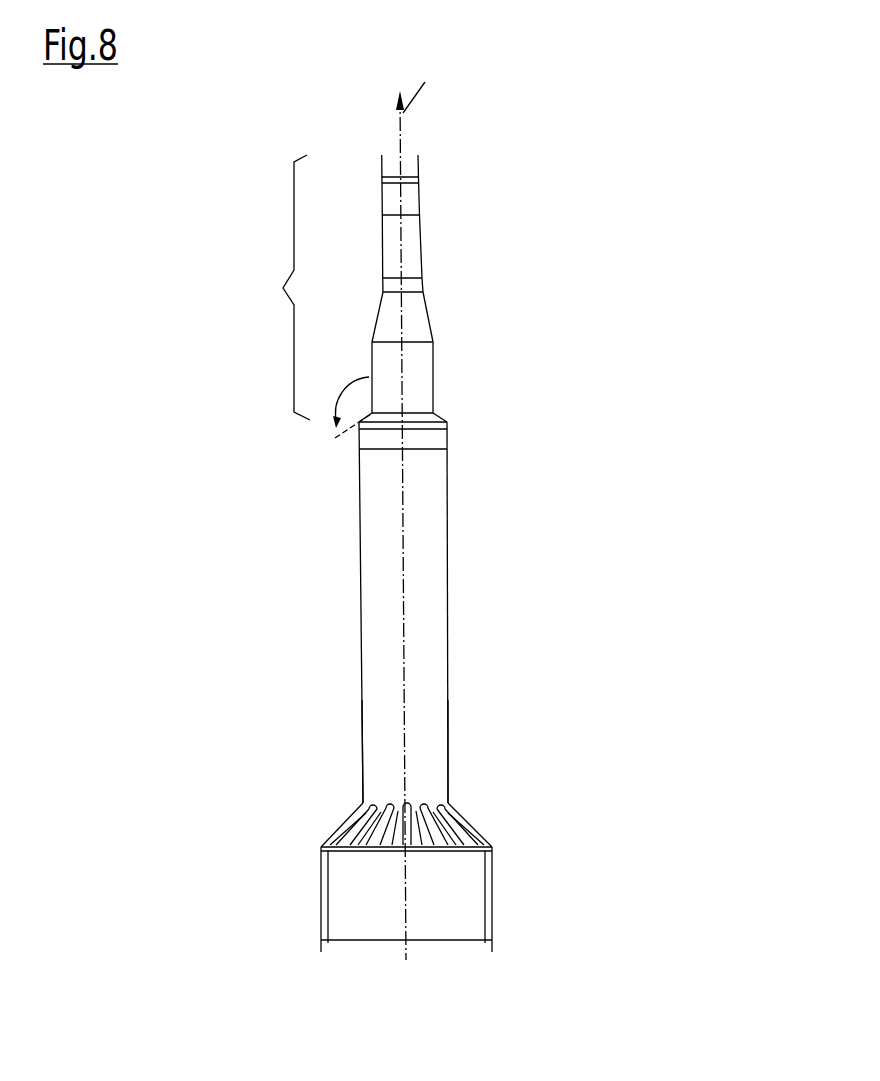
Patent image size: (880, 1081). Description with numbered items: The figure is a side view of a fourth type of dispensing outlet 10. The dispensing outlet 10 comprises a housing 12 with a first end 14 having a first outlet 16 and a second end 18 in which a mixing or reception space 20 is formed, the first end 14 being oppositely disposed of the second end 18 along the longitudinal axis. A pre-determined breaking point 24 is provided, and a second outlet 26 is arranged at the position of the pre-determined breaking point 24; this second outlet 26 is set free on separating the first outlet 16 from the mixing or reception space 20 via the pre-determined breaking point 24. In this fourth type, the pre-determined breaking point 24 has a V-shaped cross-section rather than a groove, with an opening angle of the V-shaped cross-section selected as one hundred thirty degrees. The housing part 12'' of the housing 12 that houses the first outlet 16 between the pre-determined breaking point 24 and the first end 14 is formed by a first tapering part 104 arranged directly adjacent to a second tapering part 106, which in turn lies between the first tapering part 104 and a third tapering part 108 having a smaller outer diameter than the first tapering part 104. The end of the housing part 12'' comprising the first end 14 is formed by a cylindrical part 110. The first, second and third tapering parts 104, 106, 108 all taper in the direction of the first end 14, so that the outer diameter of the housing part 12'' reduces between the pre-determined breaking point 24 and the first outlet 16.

The dispensing outlet 10 is at (614, 146).
The housing 12 is at (438, 612).
The housing part 12'' is at (276, 287).
The first end 14 is at (408, 203).
The first outlet 16 is at (417, 177).
The second end 18 is at (466, 877).
The mixing or reception space 20 is at (432, 733).
The pre-determined breaking point 24 is at (447, 407).
The second outlet 26 is at (435, 408).
The first tapering part 104 is at (432, 363).
The second tapering part 106 is at (430, 315).
The third tapering part 108 is at (423, 283).
The cylindrical part 110 is at (422, 243).